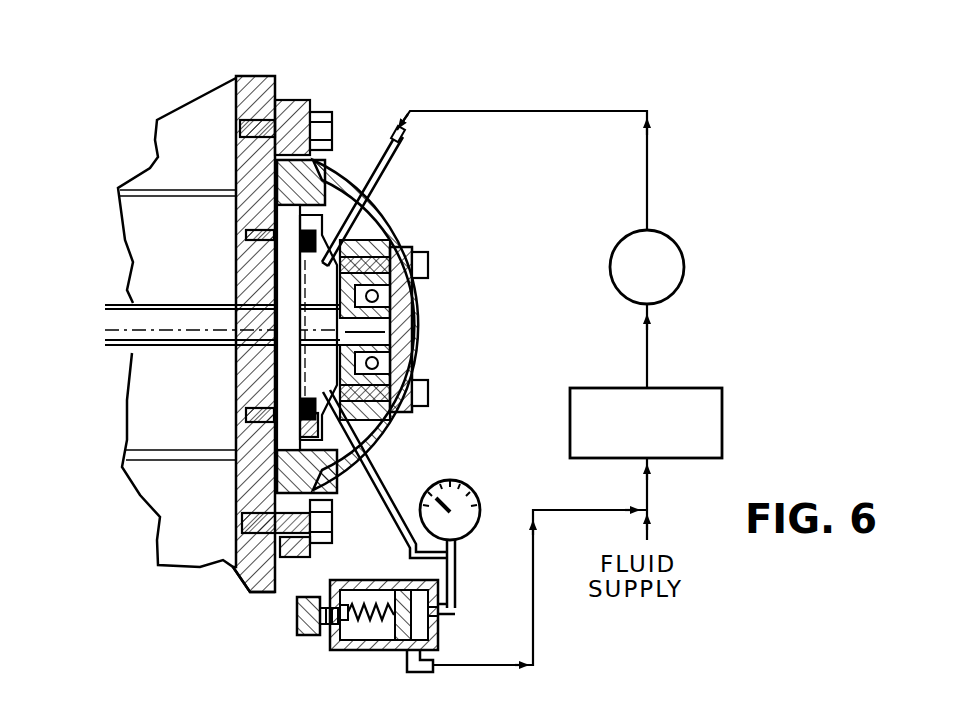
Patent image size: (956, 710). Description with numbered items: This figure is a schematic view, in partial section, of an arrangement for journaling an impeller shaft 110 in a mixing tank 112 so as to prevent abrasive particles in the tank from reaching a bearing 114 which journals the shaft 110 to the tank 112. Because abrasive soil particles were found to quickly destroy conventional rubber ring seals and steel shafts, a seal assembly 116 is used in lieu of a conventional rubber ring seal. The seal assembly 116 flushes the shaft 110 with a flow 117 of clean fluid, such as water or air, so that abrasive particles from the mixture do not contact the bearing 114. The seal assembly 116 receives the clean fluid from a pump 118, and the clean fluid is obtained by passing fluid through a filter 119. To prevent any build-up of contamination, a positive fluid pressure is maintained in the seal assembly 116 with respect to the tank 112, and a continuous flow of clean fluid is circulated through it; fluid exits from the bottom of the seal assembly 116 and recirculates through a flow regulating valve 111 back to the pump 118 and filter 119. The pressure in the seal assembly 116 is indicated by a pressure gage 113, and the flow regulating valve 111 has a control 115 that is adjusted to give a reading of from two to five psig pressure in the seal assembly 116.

The impeller shaft 110 is at (223, 300).
The flow regulating valve 111 is at (355, 652).
The mixing tank 112 is at (172, 95).
The pressure gage 113 is at (468, 486).
The bearing 114 is at (412, 290).
The control 115 is at (297, 620).
The seal assembly 116 is at (382, 422).
The flow 117 is at (143, 385).
The pump 118 is at (683, 258).
The filter 119 is at (693, 388).